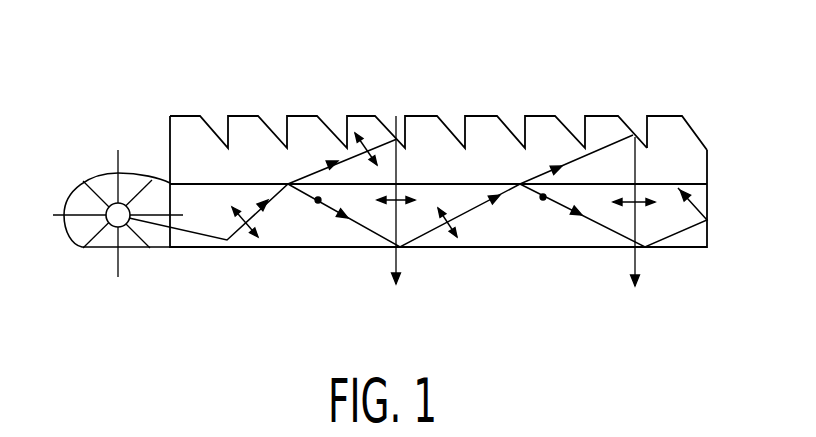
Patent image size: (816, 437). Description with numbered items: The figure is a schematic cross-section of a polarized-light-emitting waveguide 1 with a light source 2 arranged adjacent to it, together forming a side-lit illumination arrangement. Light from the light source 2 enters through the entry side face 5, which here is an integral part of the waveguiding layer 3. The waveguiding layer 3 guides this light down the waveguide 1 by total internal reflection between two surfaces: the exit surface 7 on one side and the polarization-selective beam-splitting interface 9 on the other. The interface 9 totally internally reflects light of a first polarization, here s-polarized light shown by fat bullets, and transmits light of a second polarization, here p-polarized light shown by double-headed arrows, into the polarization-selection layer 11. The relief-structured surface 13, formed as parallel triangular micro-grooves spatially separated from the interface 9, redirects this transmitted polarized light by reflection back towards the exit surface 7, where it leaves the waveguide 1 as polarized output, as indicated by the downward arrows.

The waveguide 1 is at (112, 102).
The light source 2 is at (97, 208).
The waveguiding layer 3 is at (672, 222).
The entry side face 5 is at (170, 190).
The exit surface 7 is at (483, 248).
The polarization-selective beam-splitting interface 9 is at (658, 184).
The polarization-selection layer 11 is at (670, 153).
The relief-structured surface 13 is at (478, 116).